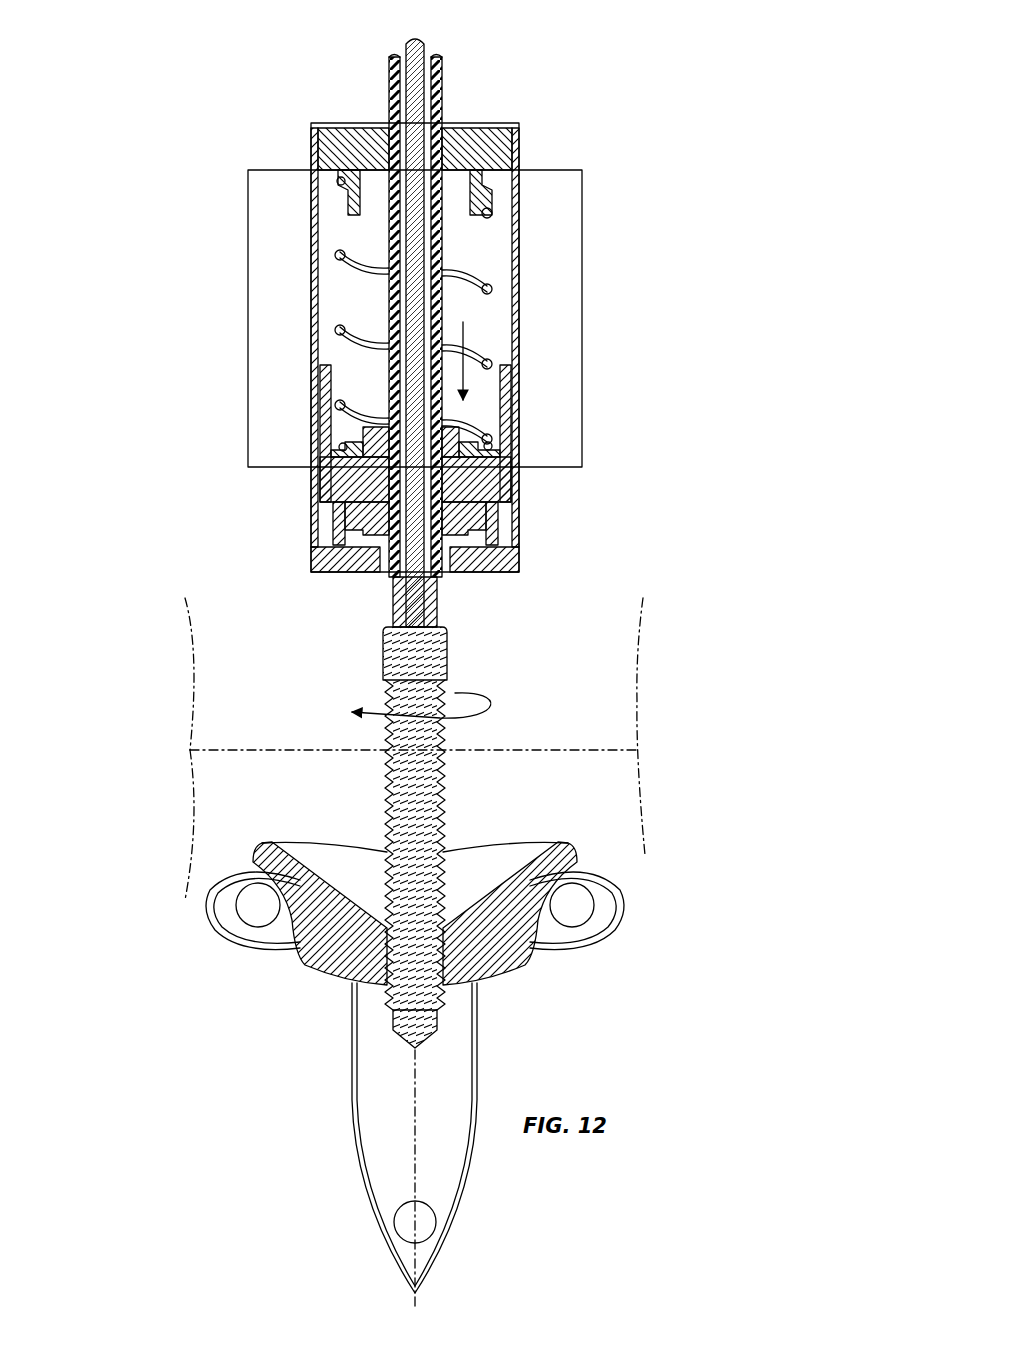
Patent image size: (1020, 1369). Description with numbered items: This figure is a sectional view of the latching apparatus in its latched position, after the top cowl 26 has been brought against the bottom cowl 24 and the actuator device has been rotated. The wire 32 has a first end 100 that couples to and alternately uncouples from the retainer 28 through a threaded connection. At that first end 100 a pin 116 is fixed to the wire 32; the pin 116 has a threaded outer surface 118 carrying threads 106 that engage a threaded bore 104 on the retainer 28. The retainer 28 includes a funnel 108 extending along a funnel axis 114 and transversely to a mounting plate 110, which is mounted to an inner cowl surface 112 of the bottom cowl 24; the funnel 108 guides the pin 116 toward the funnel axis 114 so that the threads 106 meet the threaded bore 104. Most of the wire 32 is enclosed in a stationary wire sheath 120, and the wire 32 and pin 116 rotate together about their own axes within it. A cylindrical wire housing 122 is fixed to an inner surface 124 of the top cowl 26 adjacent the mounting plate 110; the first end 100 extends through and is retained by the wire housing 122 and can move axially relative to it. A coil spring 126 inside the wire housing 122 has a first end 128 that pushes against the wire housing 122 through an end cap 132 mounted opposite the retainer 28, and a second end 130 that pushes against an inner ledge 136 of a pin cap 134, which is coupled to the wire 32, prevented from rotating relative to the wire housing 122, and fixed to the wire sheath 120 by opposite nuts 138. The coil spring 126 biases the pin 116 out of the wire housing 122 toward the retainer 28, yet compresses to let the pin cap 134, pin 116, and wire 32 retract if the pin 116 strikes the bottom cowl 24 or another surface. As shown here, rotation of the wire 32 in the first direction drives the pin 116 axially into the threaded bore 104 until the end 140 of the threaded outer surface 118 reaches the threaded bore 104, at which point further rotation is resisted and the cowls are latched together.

The bottom cowl 24 is at (186, 859).
The top cowl 26 is at (178, 678).
The retainer 28 is at (255, 1162).
The wire 32 is at (424, 56).
The first end 100 is at (504, 632).
The threaded bore 104 is at (357, 984).
The threads 106 is at (448, 760).
The funnel 108 is at (513, 860).
The mounting plate 110 is at (455, 1058).
The inner cowl surface 112 is at (625, 775).
The funnel axis 114 is at (418, 1160).
The pin 116 is at (393, 596).
The threaded outer surface 118 is at (376, 806).
The wire sheath 120 is at (442, 112).
The wire housing 122 is at (532, 308).
The inner surface 124 is at (628, 640).
The coil spring 126 is at (480, 280).
The first end 128 is at (495, 199).
The second end 130 is at (500, 453).
The end cap 132 is at (514, 125).
The pin cap 134 is at (340, 482).
The inner ledge 136 is at (330, 440).
The nuts 138 is at (487, 423).
The end 140 is at (380, 651).